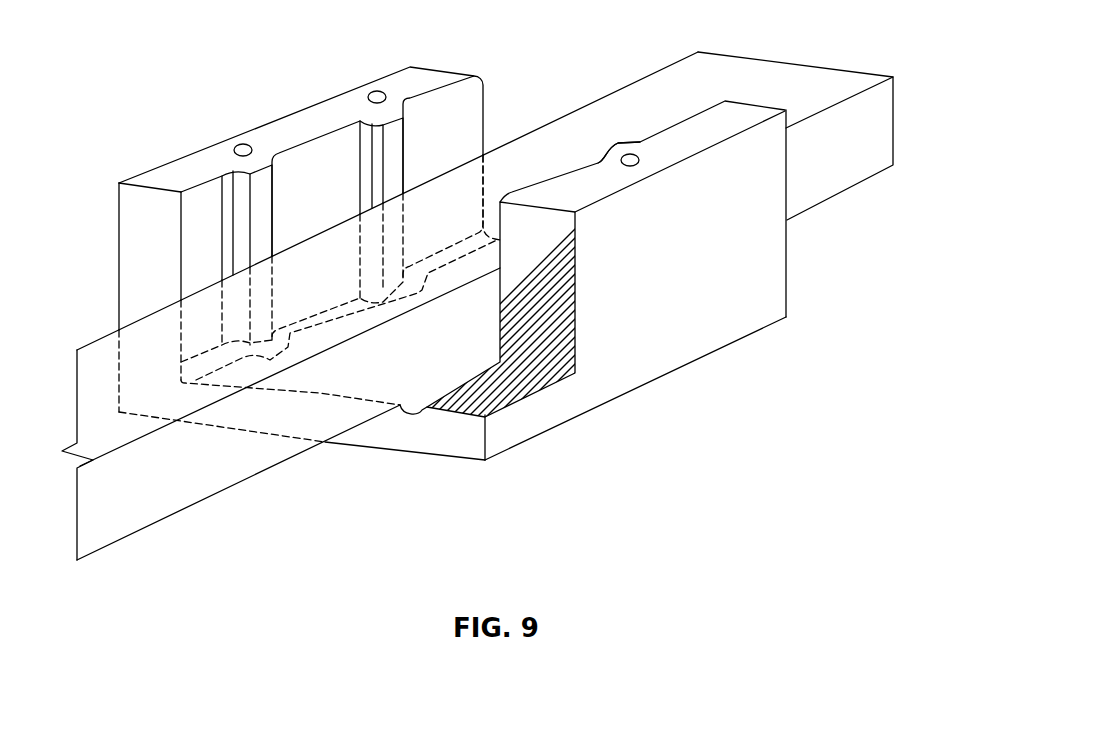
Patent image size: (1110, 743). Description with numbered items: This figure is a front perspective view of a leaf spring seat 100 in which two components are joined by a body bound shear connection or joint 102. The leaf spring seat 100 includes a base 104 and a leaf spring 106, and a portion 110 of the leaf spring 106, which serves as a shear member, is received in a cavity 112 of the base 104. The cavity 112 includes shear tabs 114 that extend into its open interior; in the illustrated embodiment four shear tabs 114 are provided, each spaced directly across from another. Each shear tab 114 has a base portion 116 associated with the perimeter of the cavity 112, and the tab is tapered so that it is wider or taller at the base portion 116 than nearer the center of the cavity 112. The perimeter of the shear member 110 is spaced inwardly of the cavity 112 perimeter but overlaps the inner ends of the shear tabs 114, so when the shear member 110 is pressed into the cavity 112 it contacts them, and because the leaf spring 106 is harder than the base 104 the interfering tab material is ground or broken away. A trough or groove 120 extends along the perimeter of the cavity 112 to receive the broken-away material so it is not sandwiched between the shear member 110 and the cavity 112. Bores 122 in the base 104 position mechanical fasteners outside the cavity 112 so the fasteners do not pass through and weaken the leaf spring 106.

The leaf spring seat 100 is at (424, 530).
The body bound shear connection 102 is at (505, 100).
The base 104 is at (651, 387).
The leaf spring 106 is at (886, 74).
The portion of the leaf spring 110 is at (352, 213).
The cavity 112 is at (200, 216).
The shear tab 114 is at (238, 195).
The base portion 116 is at (425, 83).
The trough or groove 120 is at (412, 414).
The bore 122 is at (241, 145).